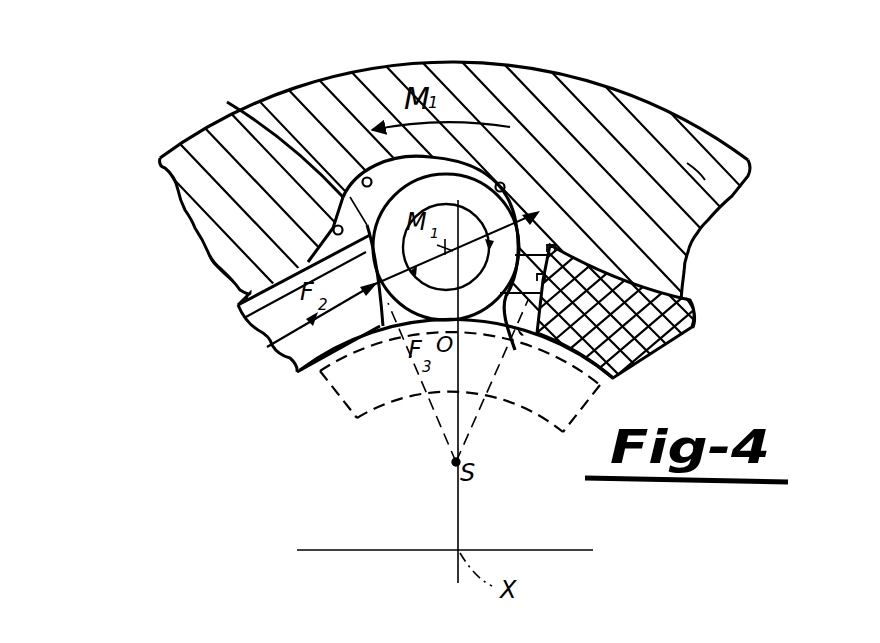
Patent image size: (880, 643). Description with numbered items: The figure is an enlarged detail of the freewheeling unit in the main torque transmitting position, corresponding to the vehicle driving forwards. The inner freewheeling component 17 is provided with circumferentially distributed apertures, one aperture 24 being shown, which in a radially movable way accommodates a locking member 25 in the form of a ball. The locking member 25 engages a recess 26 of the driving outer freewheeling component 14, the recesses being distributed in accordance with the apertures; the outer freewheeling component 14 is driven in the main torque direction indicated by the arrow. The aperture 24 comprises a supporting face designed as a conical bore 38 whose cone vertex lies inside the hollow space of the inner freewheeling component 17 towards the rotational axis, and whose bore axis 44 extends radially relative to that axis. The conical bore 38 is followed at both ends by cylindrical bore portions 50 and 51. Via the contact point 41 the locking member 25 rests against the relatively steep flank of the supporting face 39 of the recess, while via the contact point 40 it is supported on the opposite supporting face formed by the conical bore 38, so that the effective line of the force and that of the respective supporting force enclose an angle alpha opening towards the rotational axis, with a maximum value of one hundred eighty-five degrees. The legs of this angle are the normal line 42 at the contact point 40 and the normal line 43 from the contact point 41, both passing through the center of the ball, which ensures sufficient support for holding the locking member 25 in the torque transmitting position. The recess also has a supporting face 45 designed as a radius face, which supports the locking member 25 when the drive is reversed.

The outer freewheeling component 14 is at (732, 196).
The inner freewheeling component 17 is at (603, 348).
The aperture 24 is at (605, 348).
The locking member 25 is at (448, 190).
The recess 26 is at (352, 197).
The conical bore 38 is at (694, 318).
The supporting face 39 is at (516, 215).
The contact point 40 is at (230, 103).
The contact point 41 is at (540, 210).
The normal line 42 is at (364, 178).
The normal line 43 is at (501, 183).
The bore axis 44 is at (465, 406).
The supporting face 45 is at (333, 224).
The cylindrical bore portion 50 is at (647, 287).
The cylindrical bore portion 51 is at (515, 350).